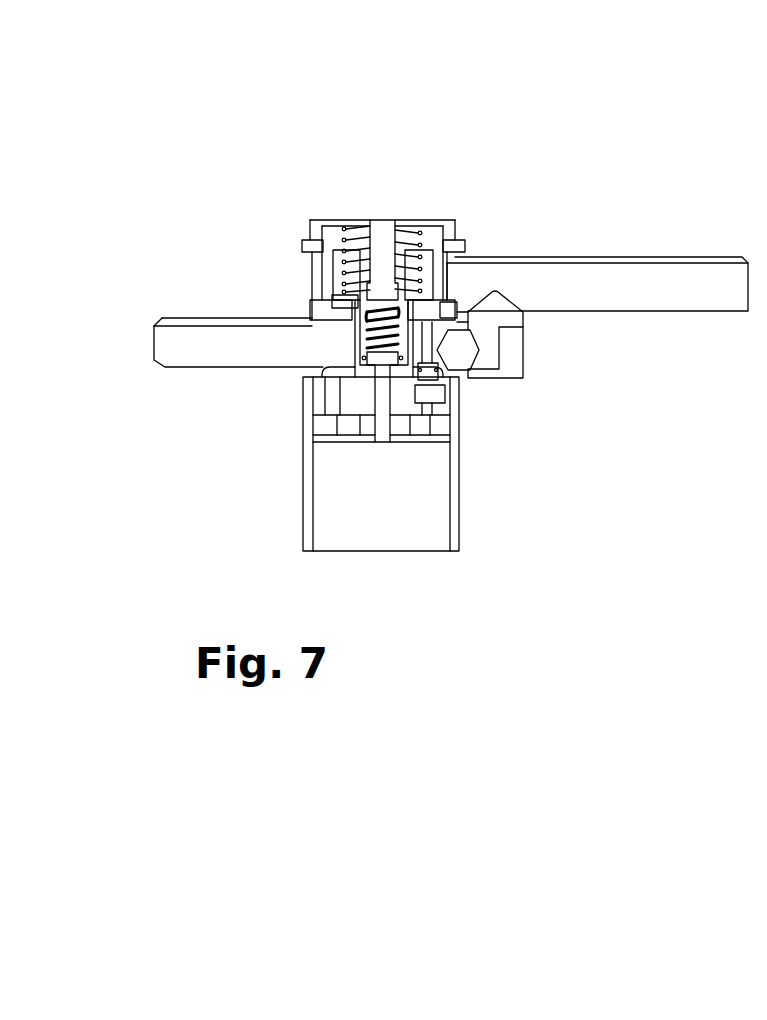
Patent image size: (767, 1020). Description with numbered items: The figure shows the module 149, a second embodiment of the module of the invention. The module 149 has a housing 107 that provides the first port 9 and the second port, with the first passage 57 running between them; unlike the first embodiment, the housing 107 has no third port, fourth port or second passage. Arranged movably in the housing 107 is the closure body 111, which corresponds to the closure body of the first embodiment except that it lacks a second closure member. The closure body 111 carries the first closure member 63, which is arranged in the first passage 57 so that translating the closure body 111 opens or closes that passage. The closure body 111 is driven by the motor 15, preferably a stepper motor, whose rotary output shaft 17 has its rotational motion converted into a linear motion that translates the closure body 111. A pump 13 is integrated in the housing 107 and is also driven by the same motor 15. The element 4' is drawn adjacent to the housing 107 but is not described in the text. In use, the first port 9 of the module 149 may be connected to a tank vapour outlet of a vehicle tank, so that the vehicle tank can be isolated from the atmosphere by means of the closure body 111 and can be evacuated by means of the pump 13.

The module 149 is at (524, 203).
The second arm 4' is at (597, 248).
The first port 9 is at (205, 342).
The housing 107 is at (313, 297).
The closure body 111 is at (383, 250).
The first passage 57 is at (427, 282).
The first closure member 63 is at (343, 322).
The pump 13 is at (492, 434).
The motor 15 is at (397, 515).
The rotary output shaft 17 is at (382, 423).